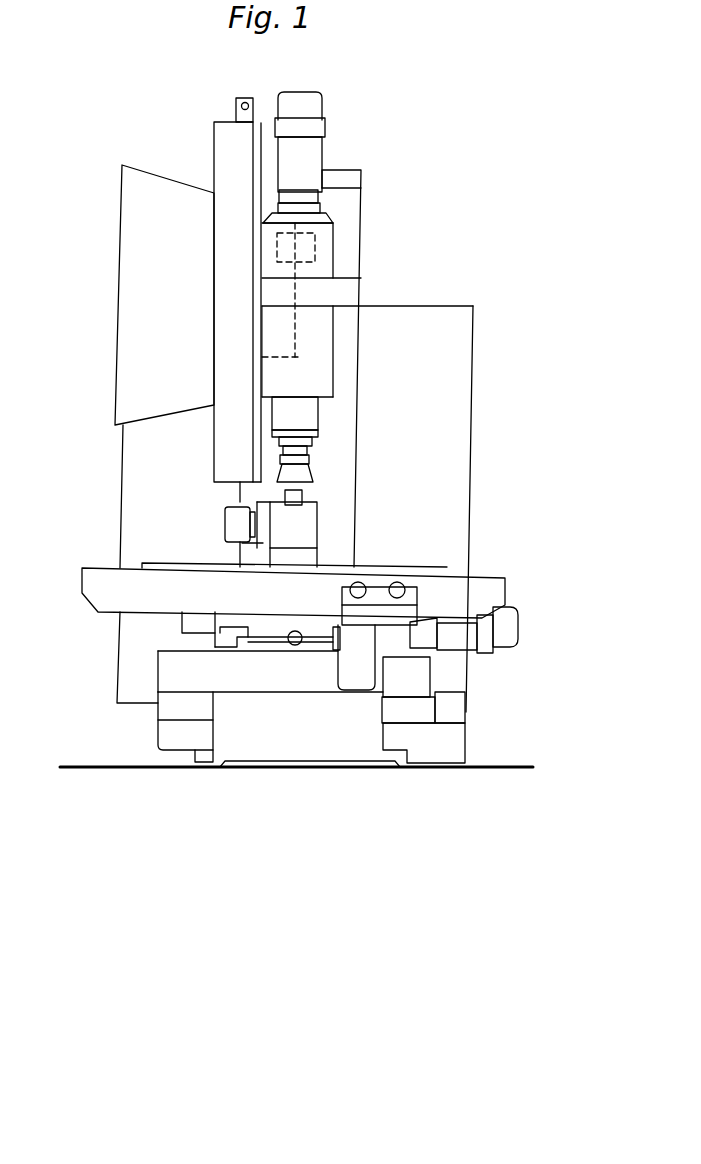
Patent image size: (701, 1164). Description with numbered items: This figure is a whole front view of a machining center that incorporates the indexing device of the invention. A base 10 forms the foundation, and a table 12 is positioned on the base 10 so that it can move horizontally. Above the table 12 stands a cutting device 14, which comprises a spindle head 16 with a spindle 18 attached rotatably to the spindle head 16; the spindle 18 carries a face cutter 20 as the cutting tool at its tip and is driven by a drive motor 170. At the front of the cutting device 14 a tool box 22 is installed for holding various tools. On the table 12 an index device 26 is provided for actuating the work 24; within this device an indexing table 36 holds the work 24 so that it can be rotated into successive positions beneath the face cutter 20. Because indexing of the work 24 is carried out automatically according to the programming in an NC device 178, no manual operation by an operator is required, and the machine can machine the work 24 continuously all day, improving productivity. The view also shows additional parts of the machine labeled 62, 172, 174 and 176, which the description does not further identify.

The base 10 is at (275, 747).
The table 12 is at (482, 585).
The cutting device 14 is at (340, 238).
The spindle head 16 is at (322, 263).
The spindle 18 is at (307, 415).
The face cutter 20 is at (297, 473).
The tool box 22 is at (137, 282).
The work 24 is at (238, 528).
The index device 26 is at (318, 527).
The indexing table 36 is at (263, 543).
The workpiece 62 is at (303, 495).
The drive motor 170 is at (298, 252).
The table drive 172 is at (298, 645).
The handle 174 is at (505, 628).
The cap 176 is at (315, 105).
The NC device 178 is at (277, 332).